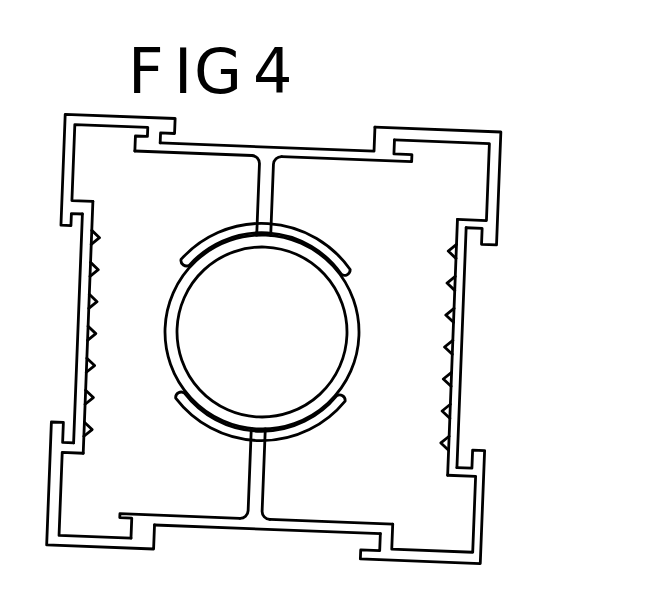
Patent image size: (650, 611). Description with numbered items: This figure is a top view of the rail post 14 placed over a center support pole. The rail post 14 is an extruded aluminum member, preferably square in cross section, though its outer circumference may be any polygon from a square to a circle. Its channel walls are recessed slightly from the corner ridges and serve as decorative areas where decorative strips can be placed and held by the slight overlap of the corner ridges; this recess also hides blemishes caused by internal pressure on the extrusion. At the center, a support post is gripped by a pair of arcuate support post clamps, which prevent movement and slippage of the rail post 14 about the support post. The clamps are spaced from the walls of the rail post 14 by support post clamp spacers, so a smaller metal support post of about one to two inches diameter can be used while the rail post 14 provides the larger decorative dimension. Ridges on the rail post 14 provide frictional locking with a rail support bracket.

The rail post 14 is at (390, 120).